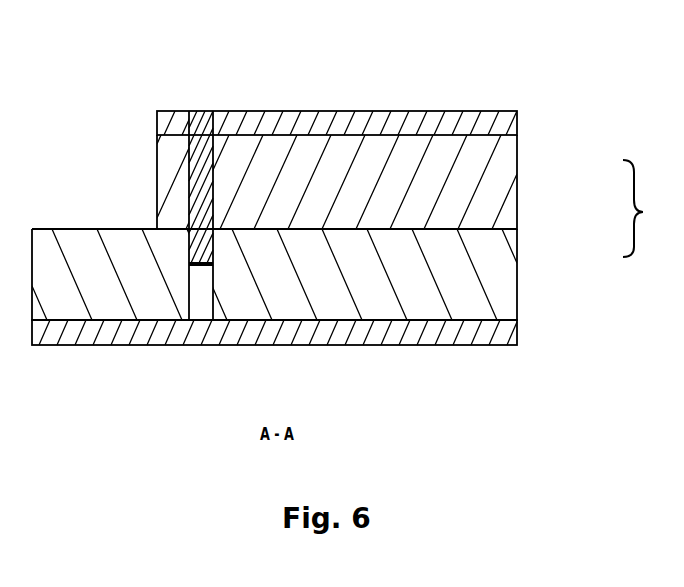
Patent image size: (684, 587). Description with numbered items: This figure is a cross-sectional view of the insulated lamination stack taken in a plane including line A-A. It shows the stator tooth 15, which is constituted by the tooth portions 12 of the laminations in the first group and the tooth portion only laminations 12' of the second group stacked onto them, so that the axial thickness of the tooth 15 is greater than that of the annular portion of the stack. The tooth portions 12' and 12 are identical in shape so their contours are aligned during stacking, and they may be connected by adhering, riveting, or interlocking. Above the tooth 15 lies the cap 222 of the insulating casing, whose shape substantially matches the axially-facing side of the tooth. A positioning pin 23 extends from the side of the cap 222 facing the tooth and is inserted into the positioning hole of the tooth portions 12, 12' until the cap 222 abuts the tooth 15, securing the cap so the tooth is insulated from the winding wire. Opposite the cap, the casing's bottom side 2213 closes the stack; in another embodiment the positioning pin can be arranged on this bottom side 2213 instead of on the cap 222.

The cap 222 is at (470, 122).
The tooth portion only lamination 12' is at (391, 182).
The tooth portion 12 is at (324, 274).
The stator tooth 15 is at (653, 208).
The positioning pin 23 is at (205, 188).
The bottom side 2213 is at (470, 328).